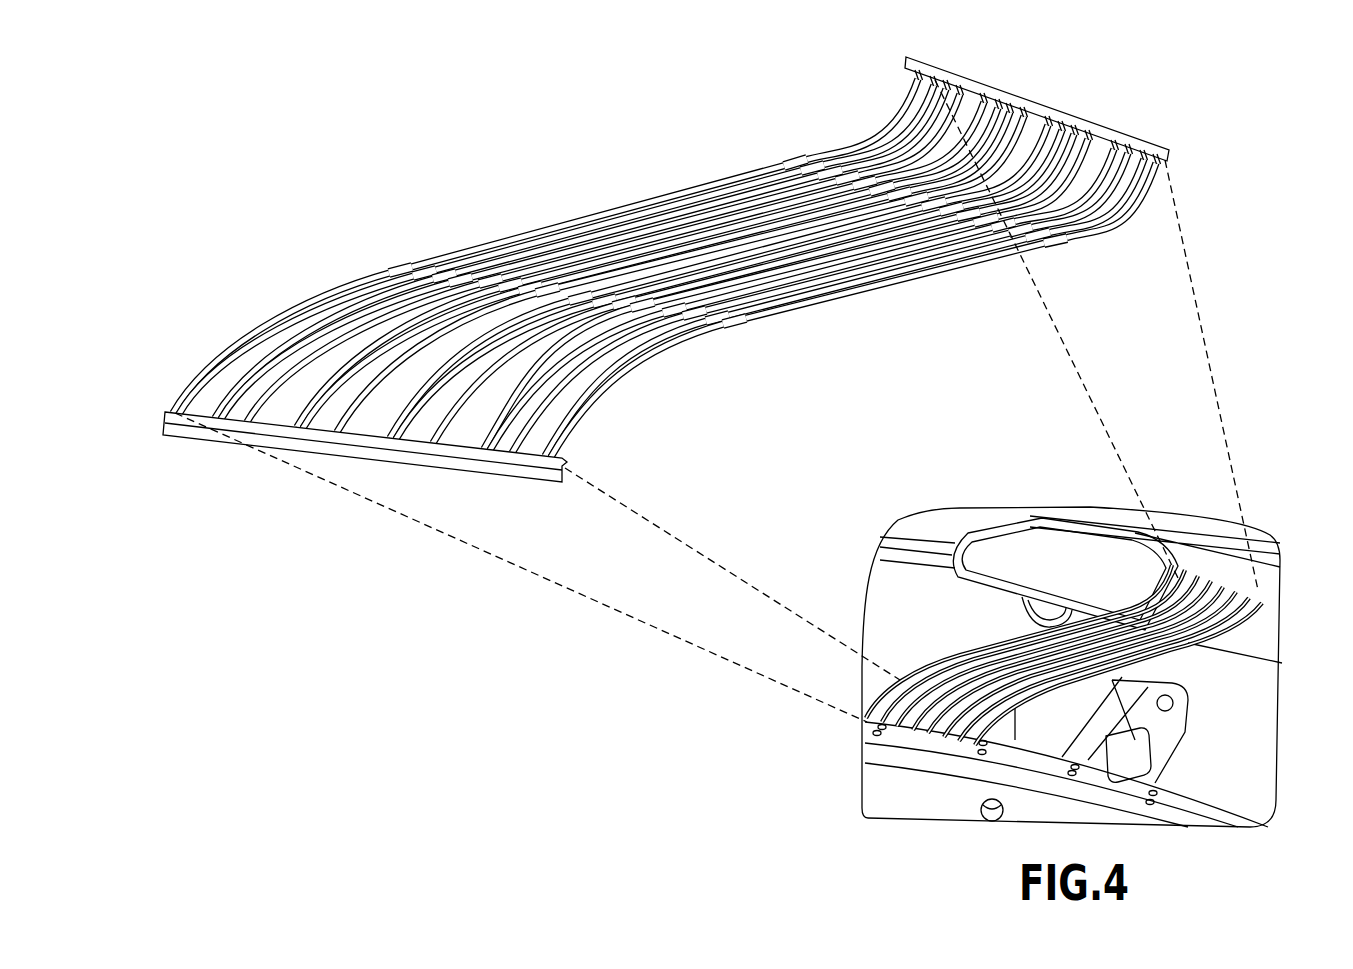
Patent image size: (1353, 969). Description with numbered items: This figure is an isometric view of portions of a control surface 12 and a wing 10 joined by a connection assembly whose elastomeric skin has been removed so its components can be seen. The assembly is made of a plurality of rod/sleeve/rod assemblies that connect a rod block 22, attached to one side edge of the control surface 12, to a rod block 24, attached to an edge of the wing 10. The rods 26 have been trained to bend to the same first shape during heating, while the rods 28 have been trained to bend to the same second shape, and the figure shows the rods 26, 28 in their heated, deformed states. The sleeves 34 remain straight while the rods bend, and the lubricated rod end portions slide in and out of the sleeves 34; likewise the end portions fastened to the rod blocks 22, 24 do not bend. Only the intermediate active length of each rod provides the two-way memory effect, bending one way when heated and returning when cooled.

The wing 10 is at (878, 755).
The control surface 12 is at (1258, 596).
The rod block 22 is at (528, 480).
The rod block 24 is at (1005, 90).
The rods 26 is at (592, 402).
The rods 28 is at (883, 124).
The sleeves 34 is at (775, 318).